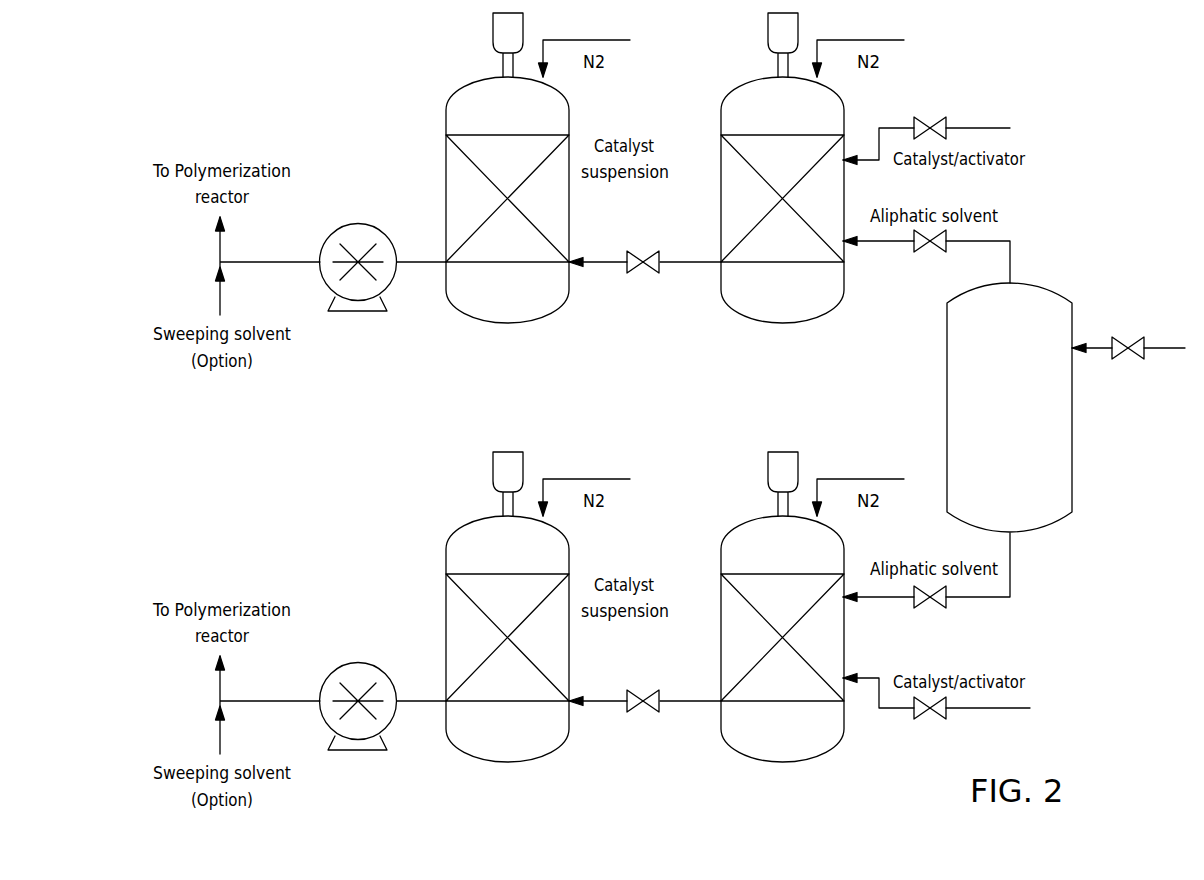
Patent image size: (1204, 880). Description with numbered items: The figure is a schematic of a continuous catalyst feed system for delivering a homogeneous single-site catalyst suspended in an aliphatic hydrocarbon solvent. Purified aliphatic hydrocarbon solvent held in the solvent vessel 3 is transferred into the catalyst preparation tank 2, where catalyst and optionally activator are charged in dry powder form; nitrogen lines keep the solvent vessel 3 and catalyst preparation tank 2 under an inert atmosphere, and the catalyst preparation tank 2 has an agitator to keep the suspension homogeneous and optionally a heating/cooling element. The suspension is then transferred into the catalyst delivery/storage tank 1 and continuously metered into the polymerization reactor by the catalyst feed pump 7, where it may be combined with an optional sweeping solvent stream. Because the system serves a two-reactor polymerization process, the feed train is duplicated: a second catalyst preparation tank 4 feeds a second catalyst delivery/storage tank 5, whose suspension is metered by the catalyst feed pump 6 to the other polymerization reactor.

The catalyst delivery/storage tank 1 is at (460, 75).
The catalyst preparation tank 2 is at (735, 75).
The solvent vessel 3 is at (1072, 441).
The catalyst preparation tank 4 is at (783, 763).
The catalyst delivery/storage tank 5 is at (508, 763).
The catalyst feed pump 6 is at (362, 750).
The catalyst feed pump 7 is at (360, 311).